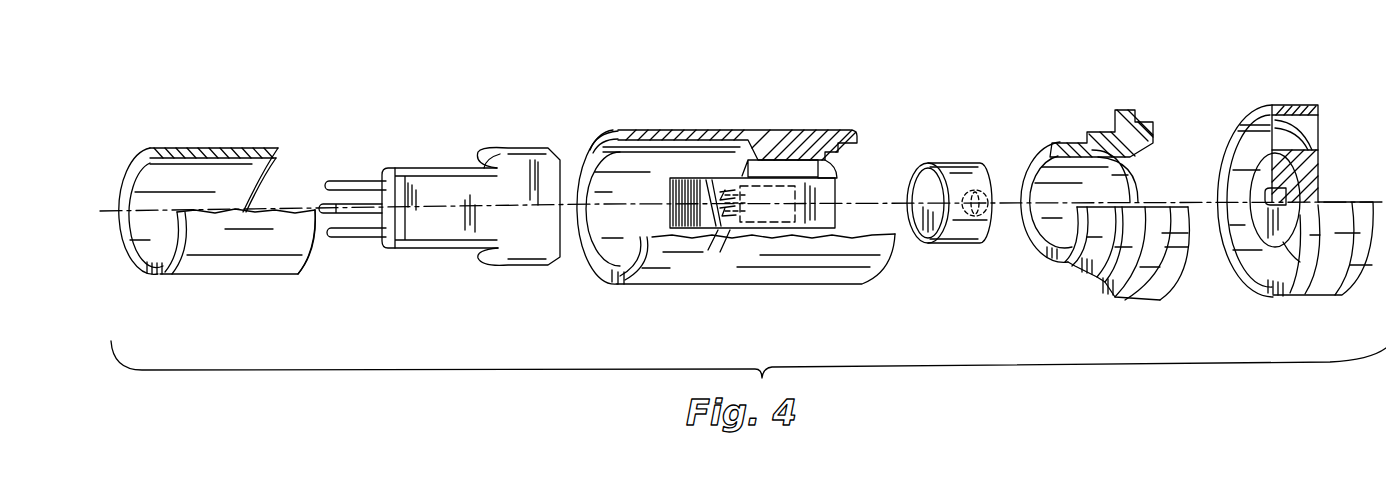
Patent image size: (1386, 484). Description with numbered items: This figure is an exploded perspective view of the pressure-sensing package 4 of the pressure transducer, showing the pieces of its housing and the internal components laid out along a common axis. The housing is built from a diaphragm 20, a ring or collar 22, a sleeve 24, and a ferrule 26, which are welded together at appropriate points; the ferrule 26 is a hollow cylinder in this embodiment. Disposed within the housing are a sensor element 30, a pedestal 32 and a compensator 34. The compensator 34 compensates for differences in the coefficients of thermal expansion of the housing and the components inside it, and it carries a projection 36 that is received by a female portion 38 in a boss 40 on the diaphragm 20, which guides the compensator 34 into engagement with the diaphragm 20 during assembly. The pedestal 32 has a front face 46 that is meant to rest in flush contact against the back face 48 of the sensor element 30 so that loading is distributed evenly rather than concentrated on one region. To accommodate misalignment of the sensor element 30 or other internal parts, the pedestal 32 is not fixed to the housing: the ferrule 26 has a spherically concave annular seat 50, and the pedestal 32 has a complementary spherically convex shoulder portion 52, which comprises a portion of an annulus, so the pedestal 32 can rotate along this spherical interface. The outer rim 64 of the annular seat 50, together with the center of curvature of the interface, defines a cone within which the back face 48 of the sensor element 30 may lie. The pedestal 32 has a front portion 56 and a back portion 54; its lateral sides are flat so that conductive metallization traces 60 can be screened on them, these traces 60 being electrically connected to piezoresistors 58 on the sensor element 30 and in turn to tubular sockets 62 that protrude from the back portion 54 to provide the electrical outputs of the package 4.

The pressure-sensing package 4 is at (300, 95).
The diaphragm 20 is at (1287, 197).
The ring 22 is at (1115, 110).
The sleeve 24 is at (725, 179).
The ferrule 26 is at (234, 191).
The sensor element 30 is at (741, 198).
The pedestal 32 is at (470, 205).
The compensator 34 is at (949, 194).
The projection 36 is at (978, 215).
The female portion 38 is at (1270, 208).
The boss 40 is at (1283, 242).
The front face 46 is at (578, 162).
The back face 48 is at (682, 192).
The spherically concave annular seat 50 is at (283, 150).
The spherically convex shoulder portion 52 is at (490, 152).
The back portion 54 is at (418, 222).
The front portion 56 is at (545, 243).
The piezoresistors 58 is at (766, 226).
The conductive metallization traces 60 is at (712, 254).
The tubular sockets 62 is at (358, 242).
The outer rim 64 is at (278, 150).